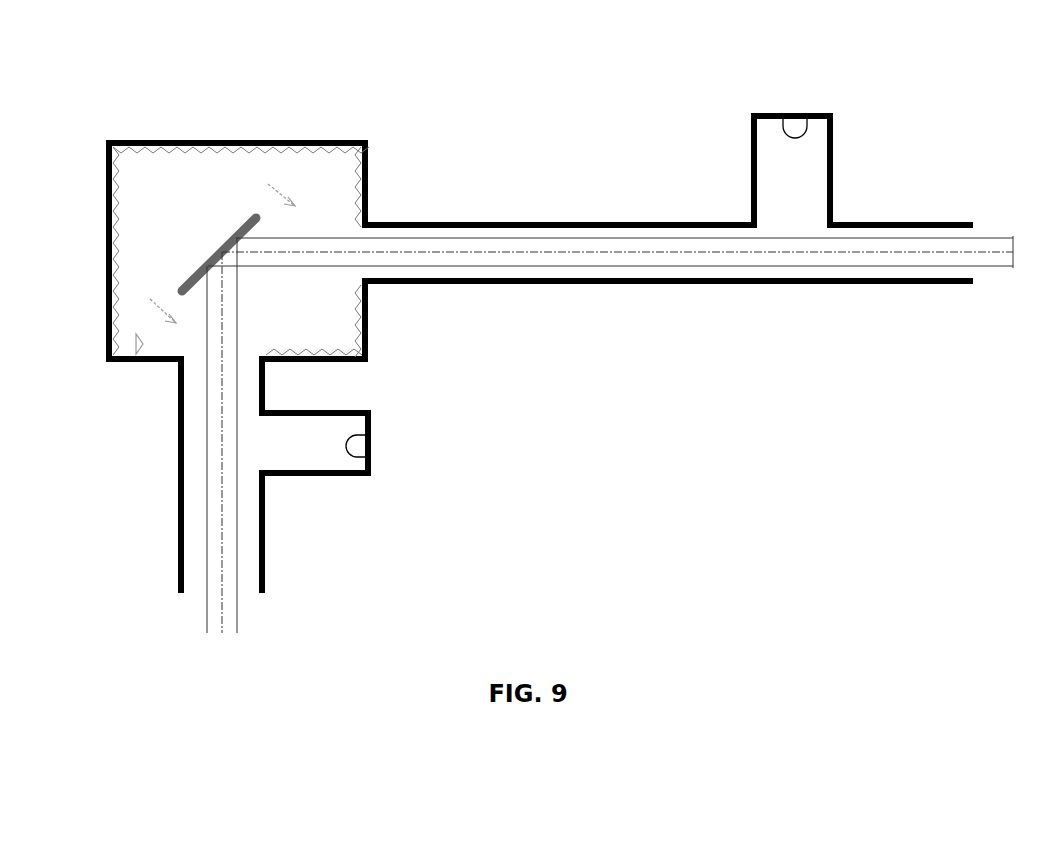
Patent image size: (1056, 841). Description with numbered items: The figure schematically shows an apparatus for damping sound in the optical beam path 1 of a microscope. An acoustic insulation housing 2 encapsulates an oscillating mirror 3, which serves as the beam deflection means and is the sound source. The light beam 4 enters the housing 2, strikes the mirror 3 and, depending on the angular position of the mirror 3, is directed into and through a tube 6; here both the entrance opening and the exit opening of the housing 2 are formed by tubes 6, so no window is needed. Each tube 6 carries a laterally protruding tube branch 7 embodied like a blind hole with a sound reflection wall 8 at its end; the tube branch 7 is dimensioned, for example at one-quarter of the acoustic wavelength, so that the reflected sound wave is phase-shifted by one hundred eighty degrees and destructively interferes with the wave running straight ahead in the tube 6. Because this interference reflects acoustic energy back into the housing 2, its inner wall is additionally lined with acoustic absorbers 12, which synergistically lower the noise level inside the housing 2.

The optical beam path 1 is at (723, 254).
The acoustic insulation housing 2 is at (253, 140).
The oscillating mirror 3 is at (205, 231).
The light beam 4 is at (1010, 236).
The tube 6 is at (515, 224).
The tube branch 7 is at (833, 153).
The sound reflection wall 8 is at (805, 117).
The acoustic absorber 12 is at (120, 244).